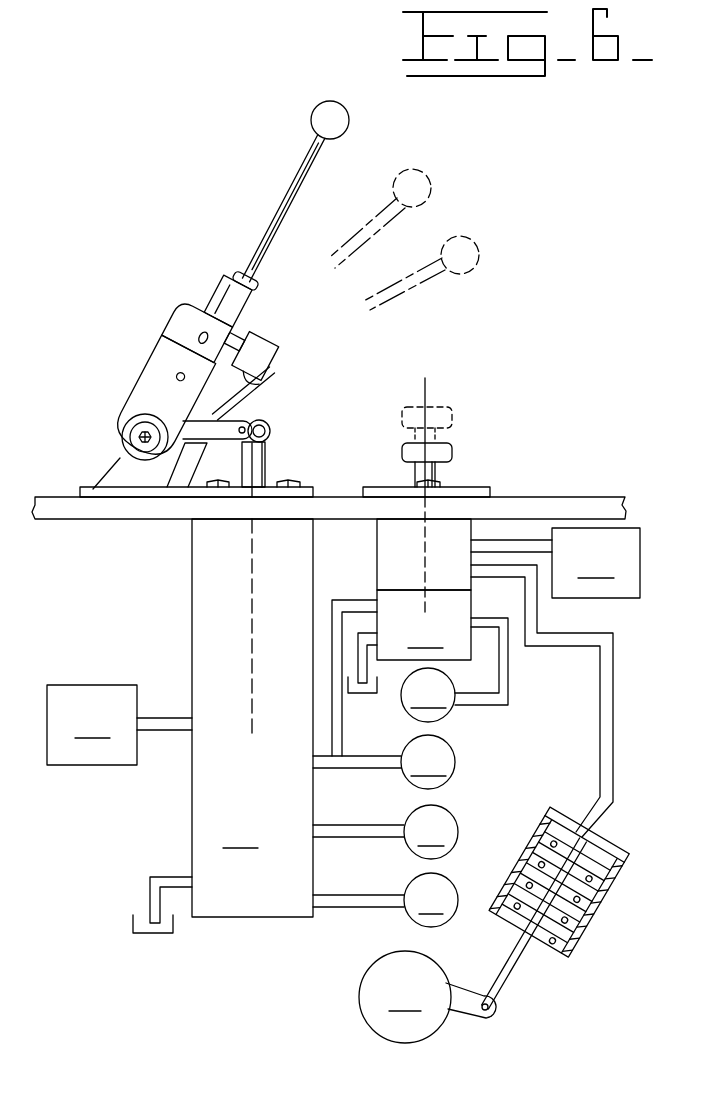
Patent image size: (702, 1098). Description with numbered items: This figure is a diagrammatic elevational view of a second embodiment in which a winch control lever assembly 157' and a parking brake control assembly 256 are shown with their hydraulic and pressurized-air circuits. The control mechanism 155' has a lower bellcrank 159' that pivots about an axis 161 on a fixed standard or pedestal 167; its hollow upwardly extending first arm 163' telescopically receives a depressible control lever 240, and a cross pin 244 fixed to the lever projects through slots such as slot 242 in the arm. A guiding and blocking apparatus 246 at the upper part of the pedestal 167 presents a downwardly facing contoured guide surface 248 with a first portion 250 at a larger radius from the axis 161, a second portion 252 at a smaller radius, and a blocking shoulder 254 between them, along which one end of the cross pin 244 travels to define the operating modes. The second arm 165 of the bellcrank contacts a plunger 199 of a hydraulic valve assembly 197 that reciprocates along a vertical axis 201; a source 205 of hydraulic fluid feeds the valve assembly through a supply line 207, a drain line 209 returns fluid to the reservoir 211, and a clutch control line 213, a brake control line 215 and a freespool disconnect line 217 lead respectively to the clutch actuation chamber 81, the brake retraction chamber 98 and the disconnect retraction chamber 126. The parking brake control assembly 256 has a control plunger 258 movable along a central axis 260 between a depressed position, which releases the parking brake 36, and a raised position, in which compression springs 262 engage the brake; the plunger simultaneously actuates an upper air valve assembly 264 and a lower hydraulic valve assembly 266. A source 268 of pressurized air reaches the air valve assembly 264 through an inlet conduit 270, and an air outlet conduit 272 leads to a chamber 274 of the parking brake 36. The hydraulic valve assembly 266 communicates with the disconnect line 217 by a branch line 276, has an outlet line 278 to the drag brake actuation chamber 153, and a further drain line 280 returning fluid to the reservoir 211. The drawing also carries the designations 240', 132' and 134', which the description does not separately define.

The control mechanism 155' is at (131, 215).
The control lever assembly 157' is at (375, 120).
The depressible control lever 240 is at (283, 208).
The handle alternate positions 240' is at (405, 239).
The guiding and blocking apparatus 246 is at (185, 313).
The cross pin 244 is at (207, 313).
The slot 242 is at (203, 338).
The first arm 163' is at (163, 399).
The lower bellcrank 159' is at (109, 396).
The axis 161 is at (142, 437).
The fixed standard or pedestal 167 is at (117, 468).
The first portion of guide surface 250 is at (246, 280).
The blocking surface or shoulder 254 is at (246, 356).
The contoured guide surface 248 is at (262, 383).
The second portion of guide surface 252 is at (253, 392).
The second arm 165 is at (228, 427).
The control element or plunger 199 is at (258, 463).
The parking brake control assembly 256 is at (433, 372).
The central axis 260 is at (427, 398).
The control plunger or member 258 is at (433, 473).
The inlet conduit 270 is at (515, 540).
The air valve assembly 264 is at (395, 553).
The hydraulic valve assembly 266 is at (424, 625).
The source of air 268 is at (596, 563).
The vertical axis 201 is at (250, 567).
The supply line 207 is at (162, 725).
The source of hydraulic fluid 205 is at (92, 725).
The drain line 280 is at (362, 660).
The branch line 276 is at (330, 697).
The sump or reservoir 211 is at (360, 698).
The drag brake actuation chamber 153 is at (430, 695).
The circuit 134' is at (522, 725).
The outlet line 278 is at (507, 673).
The air outlet conduit 272 is at (606, 688).
The chamber 274 is at (588, 853).
The compression springs 262 is at (587, 927).
The hydraulic valve assembly 197 is at (252, 718).
The control assembly 132' is at (110, 857).
The drain line 209 is at (153, 885).
The freespool disconnect line 217 is at (372, 768).
The disconnect retraction chamber 126 is at (430, 762).
The brake control line 215 is at (377, 838).
The brake retraction chamber 98 is at (431, 832).
The clutch control line 213 is at (375, 908).
The clutch actuation chamber 81 is at (431, 900).
The parking brake 36 is at (405, 997).